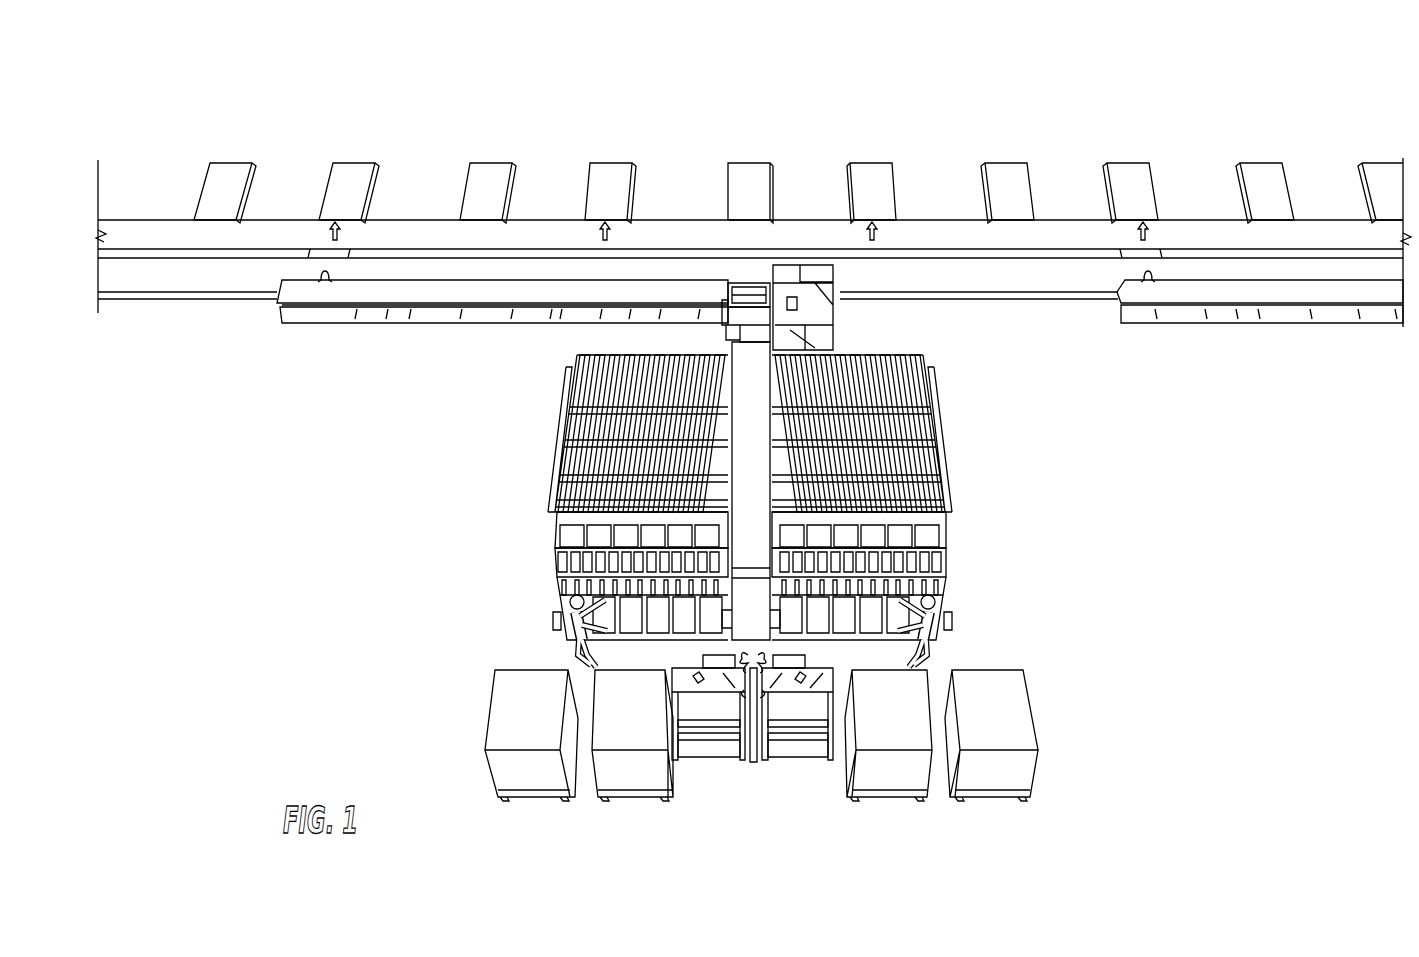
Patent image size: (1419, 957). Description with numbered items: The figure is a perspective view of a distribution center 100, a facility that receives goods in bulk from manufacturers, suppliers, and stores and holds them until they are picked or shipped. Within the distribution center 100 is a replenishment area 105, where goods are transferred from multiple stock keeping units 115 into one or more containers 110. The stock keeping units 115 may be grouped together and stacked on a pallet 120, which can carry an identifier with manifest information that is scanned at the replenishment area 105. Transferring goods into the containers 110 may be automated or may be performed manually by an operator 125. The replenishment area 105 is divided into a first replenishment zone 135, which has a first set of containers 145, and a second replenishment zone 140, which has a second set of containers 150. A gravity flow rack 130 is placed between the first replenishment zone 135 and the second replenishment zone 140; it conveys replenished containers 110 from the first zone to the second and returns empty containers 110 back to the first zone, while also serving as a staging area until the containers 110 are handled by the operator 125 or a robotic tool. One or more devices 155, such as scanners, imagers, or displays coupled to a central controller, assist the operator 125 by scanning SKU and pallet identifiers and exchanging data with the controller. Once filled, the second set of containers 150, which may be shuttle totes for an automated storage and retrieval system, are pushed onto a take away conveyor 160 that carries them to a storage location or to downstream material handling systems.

The distribution center 100 is at (1292, 132).
The replenishment area 105 is at (788, 603).
The containers 110 is at (822, 537).
The stock keeping units (SKUs) 115 is at (998, 768).
The pallet 120 is at (887, 788).
The operator 125 is at (945, 604).
The gravity flow rack 130 is at (913, 468).
The first replenishment zone 135 is at (558, 628).
The second replenishment zone 140 is at (337, 323).
The first set of containers 145 is at (635, 642).
The second set of containers 150 is at (757, 297).
The devices 155 is at (813, 682).
The take away conveyor 160 is at (537, 233).